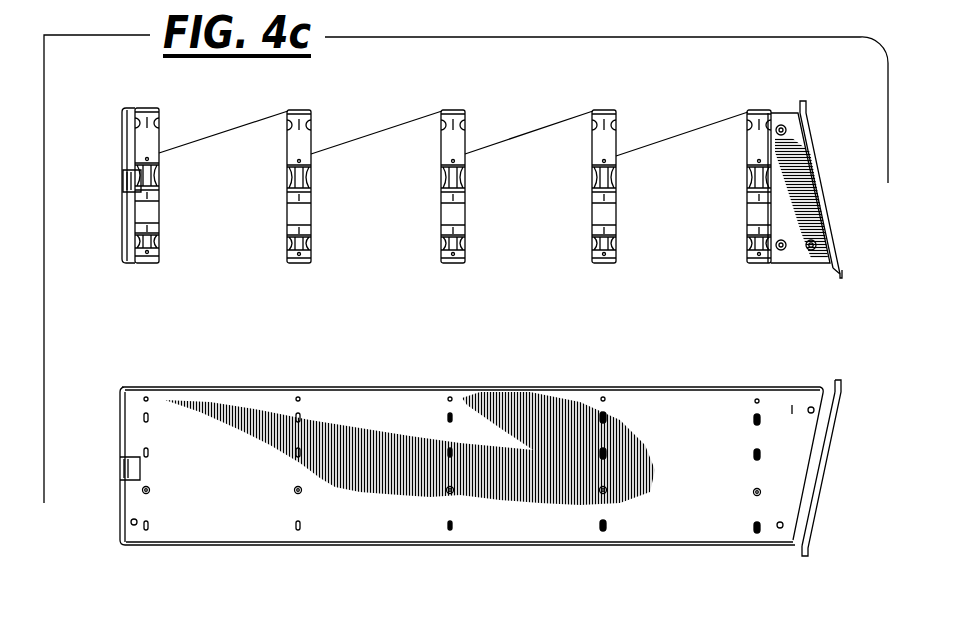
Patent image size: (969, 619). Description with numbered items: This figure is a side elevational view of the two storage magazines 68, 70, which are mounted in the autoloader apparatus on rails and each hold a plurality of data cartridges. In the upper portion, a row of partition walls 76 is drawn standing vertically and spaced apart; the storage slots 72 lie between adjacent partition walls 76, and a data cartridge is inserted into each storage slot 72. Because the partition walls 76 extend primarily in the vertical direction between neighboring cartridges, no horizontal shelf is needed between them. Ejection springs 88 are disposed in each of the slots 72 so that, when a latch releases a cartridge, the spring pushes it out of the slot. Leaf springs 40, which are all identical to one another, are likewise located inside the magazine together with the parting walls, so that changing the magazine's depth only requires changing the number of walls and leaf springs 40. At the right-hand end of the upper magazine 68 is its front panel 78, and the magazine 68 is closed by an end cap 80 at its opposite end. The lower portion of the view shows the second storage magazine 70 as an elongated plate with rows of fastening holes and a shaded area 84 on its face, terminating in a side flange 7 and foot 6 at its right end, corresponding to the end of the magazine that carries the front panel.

The end cap 80 is at (123, 182).
The partition wall 76 is at (311, 230).
The leaf spring 40 is at (517, 140).
The ejection spring 88 is at (670, 134).
The storage magazine 68 is at (770, 113).
The storage slot 72 is at (677, 213).
The front panel 78 is at (826, 198).
The foot 6 is at (839, 276).
The side flange 7 is at (837, 379).
The adhesive region 84 is at (335, 512).
The storage magazine 70 is at (630, 547).